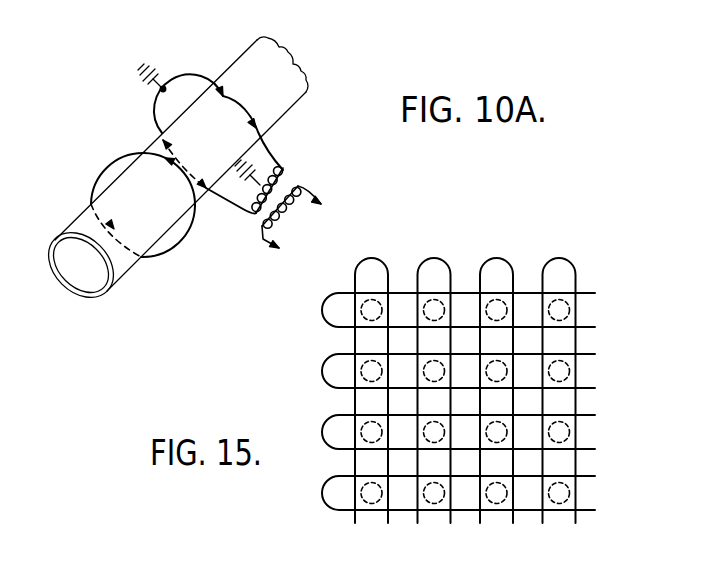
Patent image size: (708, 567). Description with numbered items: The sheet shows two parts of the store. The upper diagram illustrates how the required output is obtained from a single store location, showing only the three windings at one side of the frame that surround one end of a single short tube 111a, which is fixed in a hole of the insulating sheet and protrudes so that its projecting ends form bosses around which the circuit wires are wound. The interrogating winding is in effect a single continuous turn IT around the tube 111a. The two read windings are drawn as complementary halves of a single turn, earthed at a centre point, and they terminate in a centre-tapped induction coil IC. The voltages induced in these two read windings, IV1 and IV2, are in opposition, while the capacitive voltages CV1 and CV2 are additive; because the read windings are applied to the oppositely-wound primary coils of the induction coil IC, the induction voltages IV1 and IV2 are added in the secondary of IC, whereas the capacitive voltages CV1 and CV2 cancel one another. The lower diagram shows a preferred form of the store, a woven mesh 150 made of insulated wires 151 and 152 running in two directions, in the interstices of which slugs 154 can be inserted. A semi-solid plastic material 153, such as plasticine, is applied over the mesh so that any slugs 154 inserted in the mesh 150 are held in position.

In FIG. 10A, the short tube 111a is at (143, 256).
In FIG. 10A, the interrogating winding IT is at (118, 153).
In FIG. 10A, the capacitive voltage of first read winding CV1 is at (236, 84).
In FIG. 10A, the capacitive voltage of second read winding CV2 is at (166, 139).
In FIG. 10A, the induction voltage of first read winding IV1 is at (259, 128).
In FIG. 10A, the induction voltage of second read winding IV2 is at (204, 192).
In FIG. 10A, the centre-tapped induction coil IC is at (288, 186).
In FIG. 15, the woven mesh 150 is at (561, 518).
In FIG. 15, the insulated wires 151 is at (337, 415).
In FIG. 15, the insulated wires 152 is at (420, 513).
In FIG. 15, the semi-solid plastic material 153 is at (562, 403).
In FIG. 15, the slugs 154 is at (570, 368).